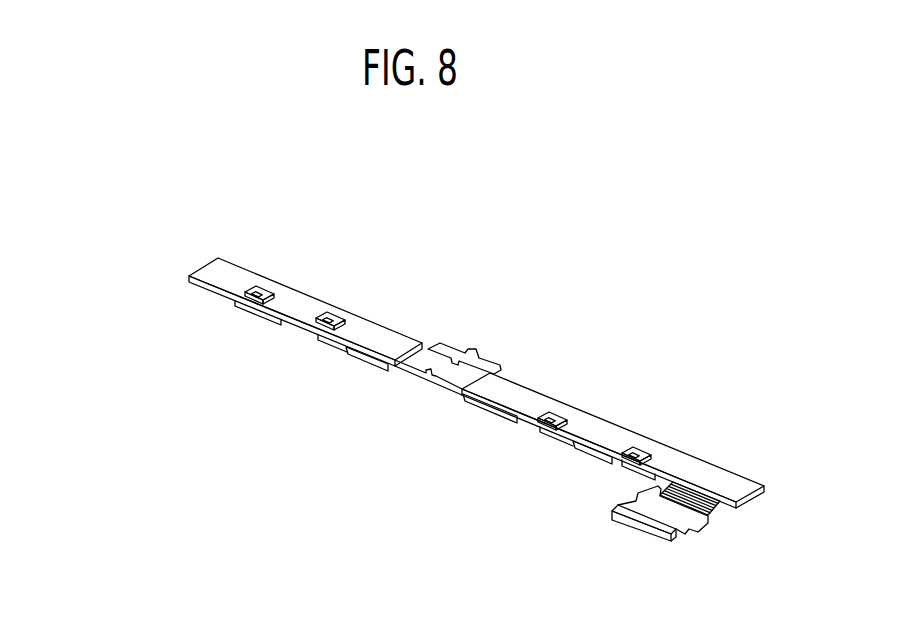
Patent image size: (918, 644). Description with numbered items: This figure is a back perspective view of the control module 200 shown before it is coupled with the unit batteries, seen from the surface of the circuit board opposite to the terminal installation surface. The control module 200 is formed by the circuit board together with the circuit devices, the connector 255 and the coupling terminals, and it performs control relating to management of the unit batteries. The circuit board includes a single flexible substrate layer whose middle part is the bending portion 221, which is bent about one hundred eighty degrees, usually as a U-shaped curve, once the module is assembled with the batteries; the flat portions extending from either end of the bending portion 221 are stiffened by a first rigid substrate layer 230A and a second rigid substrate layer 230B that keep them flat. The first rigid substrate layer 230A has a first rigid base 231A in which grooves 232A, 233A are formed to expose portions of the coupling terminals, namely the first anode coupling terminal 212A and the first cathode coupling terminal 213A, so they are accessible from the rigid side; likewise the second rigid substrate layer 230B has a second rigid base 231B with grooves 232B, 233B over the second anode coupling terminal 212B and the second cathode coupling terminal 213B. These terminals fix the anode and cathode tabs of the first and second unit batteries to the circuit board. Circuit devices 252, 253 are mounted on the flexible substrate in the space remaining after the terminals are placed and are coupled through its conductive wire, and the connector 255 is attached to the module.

The control module 200 is at (754, 223).
The first rigid substrate layer 230A is at (305, 287).
The first rigid base 231A is at (383, 337).
The groove 232A is at (336, 321).
The groove 233A is at (260, 291).
The first cathode coupling terminal 213A is at (260, 306).
The first anode coupling terminal 212A is at (325, 333).
The circuit device 253 is at (360, 372).
The bending portion 221 is at (450, 358).
The second rigid substrate layer 230B is at (608, 404).
The second rigid base 231B is at (717, 480).
The groove 232B is at (638, 450).
The groove 233B is at (550, 416).
The second anode coupling terminal 212B is at (633, 463).
The second cathode coupling terminal 213B is at (546, 433).
The circuit device 252 is at (494, 414).
The connector 255 is at (697, 545).